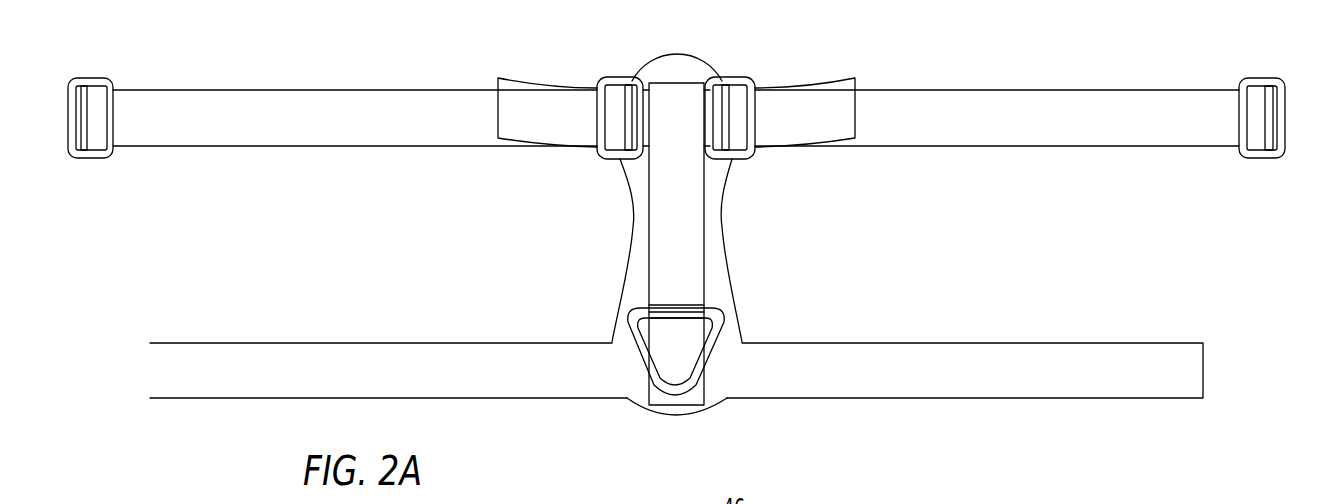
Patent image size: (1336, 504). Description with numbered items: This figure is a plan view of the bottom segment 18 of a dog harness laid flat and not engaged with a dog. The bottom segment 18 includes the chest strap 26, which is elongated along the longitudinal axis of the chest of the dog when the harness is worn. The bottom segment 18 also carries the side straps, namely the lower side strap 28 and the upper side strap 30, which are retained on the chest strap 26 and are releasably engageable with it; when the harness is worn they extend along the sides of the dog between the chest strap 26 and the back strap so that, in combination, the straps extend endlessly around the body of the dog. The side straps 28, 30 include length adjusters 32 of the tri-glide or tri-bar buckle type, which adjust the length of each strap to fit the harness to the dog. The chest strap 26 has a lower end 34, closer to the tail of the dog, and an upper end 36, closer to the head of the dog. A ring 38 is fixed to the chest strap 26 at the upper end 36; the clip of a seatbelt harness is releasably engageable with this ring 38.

The bottom segment 18 is at (951, 50).
The chest strap 26 is at (692, 228).
The lower side strap 28 is at (385, 343).
The upper side strap 30 is at (305, 90).
The length adjuster 32 is at (612, 69).
The lower end 34 is at (695, 36).
The upper end 36 is at (621, 431).
The ring 38 is at (715, 362).